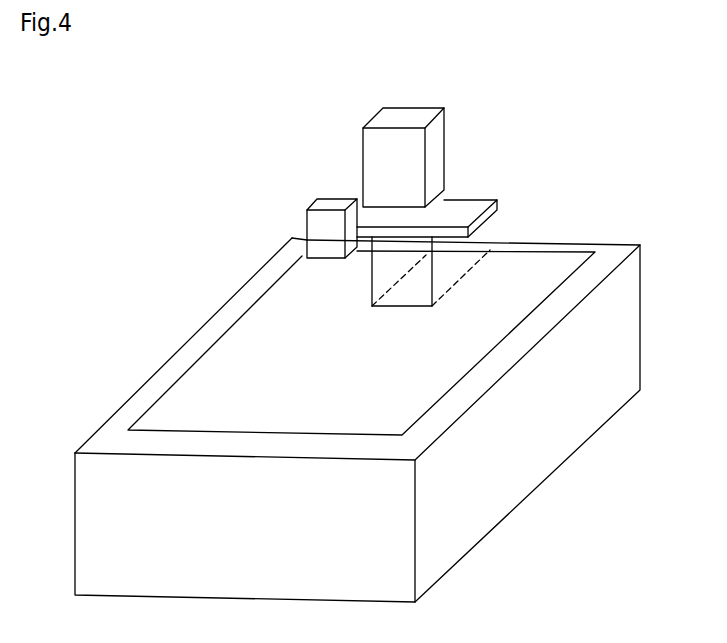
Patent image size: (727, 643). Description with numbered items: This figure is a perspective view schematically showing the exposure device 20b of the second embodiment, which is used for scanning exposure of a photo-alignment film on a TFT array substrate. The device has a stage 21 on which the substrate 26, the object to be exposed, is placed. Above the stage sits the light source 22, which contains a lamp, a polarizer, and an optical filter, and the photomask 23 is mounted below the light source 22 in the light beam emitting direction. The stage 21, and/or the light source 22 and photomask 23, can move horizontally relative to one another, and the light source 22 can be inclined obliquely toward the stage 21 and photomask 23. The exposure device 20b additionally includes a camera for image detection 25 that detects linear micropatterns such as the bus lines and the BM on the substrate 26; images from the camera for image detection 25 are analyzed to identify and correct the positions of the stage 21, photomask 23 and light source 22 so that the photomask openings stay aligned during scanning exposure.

The exposure device 20b is at (229, 250).
The stage 21 is at (393, 532).
The light source 22 is at (390, 116).
The photomask 23 is at (463, 213).
The camera for image detection 25 is at (317, 233).
The substrate 26 is at (400, 395).